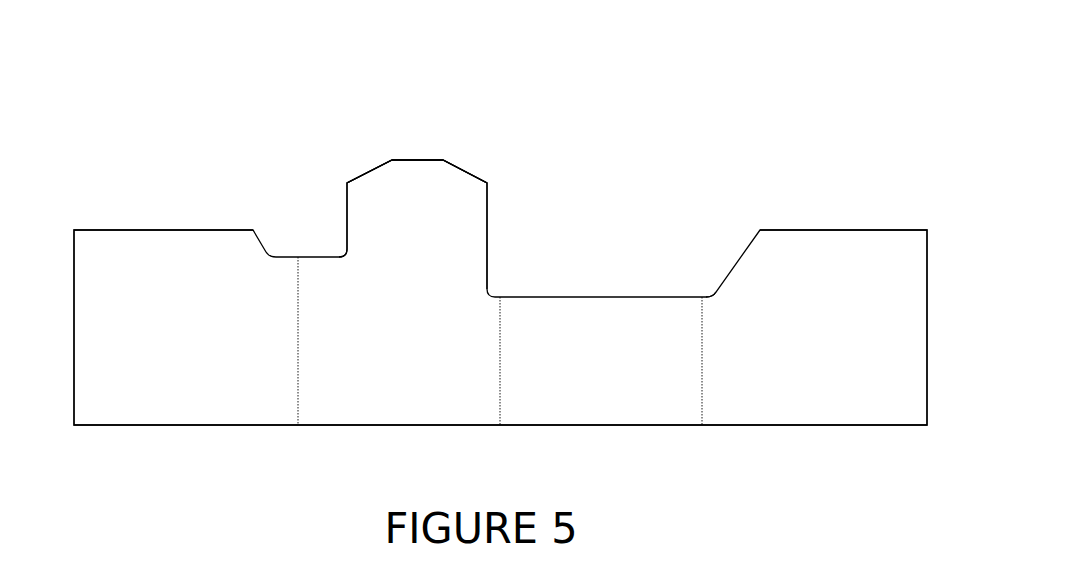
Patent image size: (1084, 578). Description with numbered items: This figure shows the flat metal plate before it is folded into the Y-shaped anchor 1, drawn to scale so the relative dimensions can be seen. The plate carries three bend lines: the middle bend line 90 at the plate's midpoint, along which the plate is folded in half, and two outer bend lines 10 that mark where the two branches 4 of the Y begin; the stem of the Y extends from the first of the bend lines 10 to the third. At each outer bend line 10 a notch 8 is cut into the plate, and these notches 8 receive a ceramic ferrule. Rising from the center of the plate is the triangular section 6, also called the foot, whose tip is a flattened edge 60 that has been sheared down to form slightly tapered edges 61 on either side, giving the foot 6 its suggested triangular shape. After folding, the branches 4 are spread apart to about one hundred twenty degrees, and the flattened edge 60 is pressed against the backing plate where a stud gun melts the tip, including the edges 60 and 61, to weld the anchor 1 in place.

The Y-shaped anchor 1 is at (500, 220).
The branches 4 is at (502, 370).
The triangular section (foot) 6 is at (481, 209).
The notch 8 is at (486, 237).
The outer bend lines 10 is at (541, 364).
The flattened edge 60 is at (447, 105).
The tapered edges 61 is at (417, 138).
The bend line (folding line) 90 is at (542, 384).